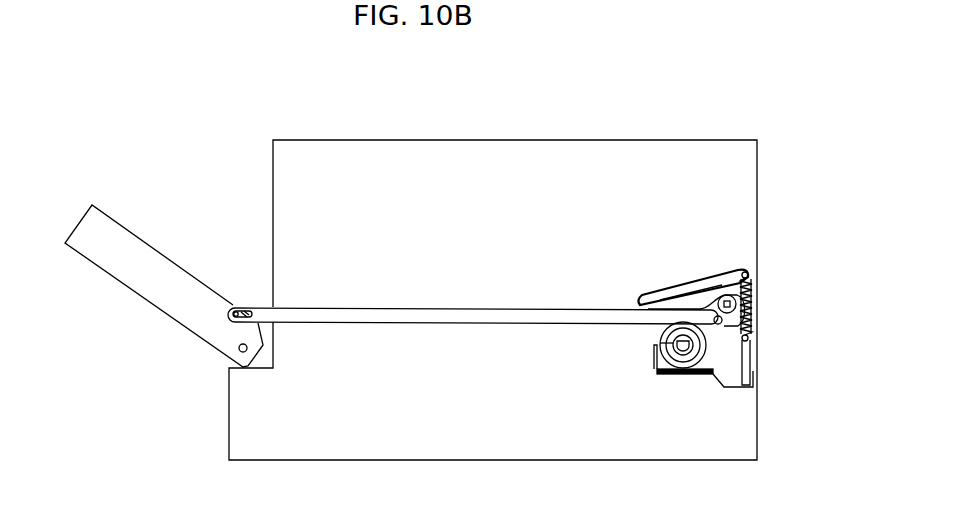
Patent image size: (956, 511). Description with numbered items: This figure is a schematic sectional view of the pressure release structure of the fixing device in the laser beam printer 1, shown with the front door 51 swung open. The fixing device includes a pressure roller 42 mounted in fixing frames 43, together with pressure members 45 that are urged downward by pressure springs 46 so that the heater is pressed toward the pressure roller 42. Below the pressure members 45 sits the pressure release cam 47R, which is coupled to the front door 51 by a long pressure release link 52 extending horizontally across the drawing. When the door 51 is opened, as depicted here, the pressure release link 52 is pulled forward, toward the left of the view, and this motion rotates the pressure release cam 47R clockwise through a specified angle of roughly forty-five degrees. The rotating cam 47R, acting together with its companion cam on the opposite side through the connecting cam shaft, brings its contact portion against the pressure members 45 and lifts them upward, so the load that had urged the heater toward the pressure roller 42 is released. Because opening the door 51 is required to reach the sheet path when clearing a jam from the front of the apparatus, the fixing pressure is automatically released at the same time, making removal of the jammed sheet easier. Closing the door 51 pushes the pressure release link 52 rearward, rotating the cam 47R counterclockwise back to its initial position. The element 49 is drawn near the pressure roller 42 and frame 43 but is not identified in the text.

The laser beam printer 1 is at (412, 122).
The pressure roller 42 is at (660, 344).
The fixing frame 43 is at (718, 380).
The pressure member 45 is at (668, 293).
The pressure spring 46 is at (744, 272).
The pressure release cam 47R is at (702, 300).
The pulley 49 is at (673, 353).
The door 51 is at (150, 268).
The pressure release link 52 is at (382, 318).